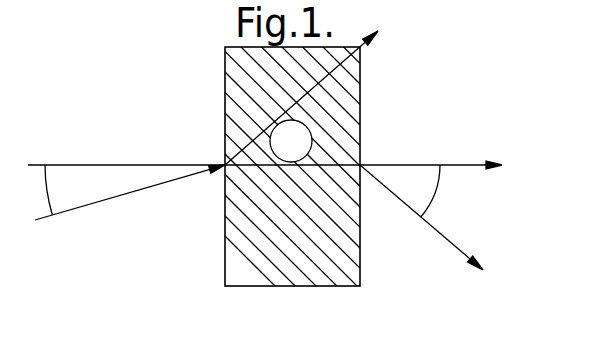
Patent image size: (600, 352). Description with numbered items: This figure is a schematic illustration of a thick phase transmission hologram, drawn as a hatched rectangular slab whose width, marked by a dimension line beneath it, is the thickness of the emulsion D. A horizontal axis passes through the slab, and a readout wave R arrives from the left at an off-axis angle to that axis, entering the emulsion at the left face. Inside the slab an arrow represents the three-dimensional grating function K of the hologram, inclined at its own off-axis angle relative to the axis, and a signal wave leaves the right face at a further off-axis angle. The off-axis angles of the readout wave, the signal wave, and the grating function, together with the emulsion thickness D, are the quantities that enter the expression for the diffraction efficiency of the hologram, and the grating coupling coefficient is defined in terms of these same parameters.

The thickness of the emulsion D is at (360, 300).
The three-dimensional grating function K is at (313, 94).
The readout wave R is at (130, 206).